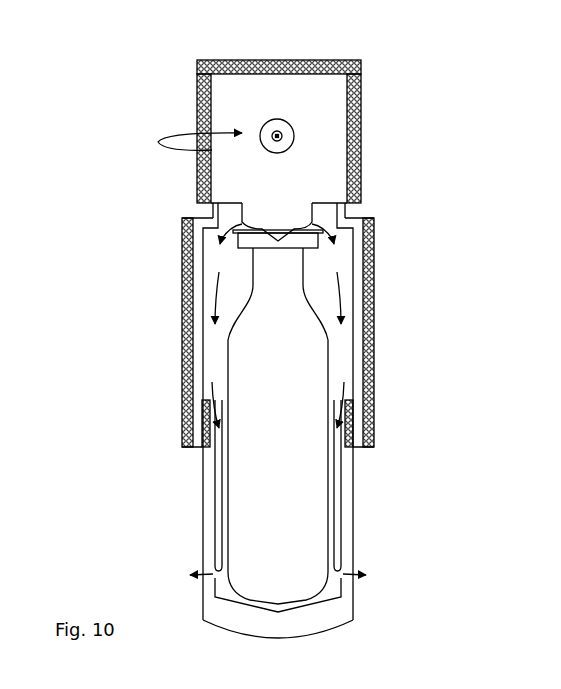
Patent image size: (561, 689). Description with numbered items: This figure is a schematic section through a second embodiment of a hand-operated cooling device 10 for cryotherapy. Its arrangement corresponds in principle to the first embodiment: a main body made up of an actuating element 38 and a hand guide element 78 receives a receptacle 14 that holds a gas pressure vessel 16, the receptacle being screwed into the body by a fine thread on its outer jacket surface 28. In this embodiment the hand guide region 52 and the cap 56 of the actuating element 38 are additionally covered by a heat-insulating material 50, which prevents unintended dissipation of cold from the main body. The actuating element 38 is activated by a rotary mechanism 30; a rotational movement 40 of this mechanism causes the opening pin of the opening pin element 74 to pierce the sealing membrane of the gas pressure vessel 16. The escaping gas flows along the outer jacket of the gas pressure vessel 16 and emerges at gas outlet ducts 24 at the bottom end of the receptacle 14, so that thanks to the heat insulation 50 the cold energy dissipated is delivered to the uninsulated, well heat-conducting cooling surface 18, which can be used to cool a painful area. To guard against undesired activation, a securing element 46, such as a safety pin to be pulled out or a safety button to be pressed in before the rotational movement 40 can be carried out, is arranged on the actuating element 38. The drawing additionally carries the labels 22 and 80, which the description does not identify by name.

The cooling device 10 is at (116, 234).
The receptacle 14 is at (348, 482).
The gas pressure vessel 16 is at (240, 516).
The cooling surface 18 is at (300, 643).
The beverage container 22 is at (215, 325).
The gas outlet ducts 24 is at (352, 573).
The outer jacket surface 28 is at (208, 218).
The rotary mechanism 30 is at (360, 147).
The actuating element 38 is at (273, 93).
The rotational movement 40 is at (324, 87).
The securing element 46 is at (290, 123).
The heat-insulating material 50 is at (350, 100).
The hand guide region 52 is at (384, 293).
The cap 56 is at (278, 350).
The opening pin element 74 is at (253, 216).
The hand guide element 78 is at (366, 272).
The bottle 80 is at (278, 417).